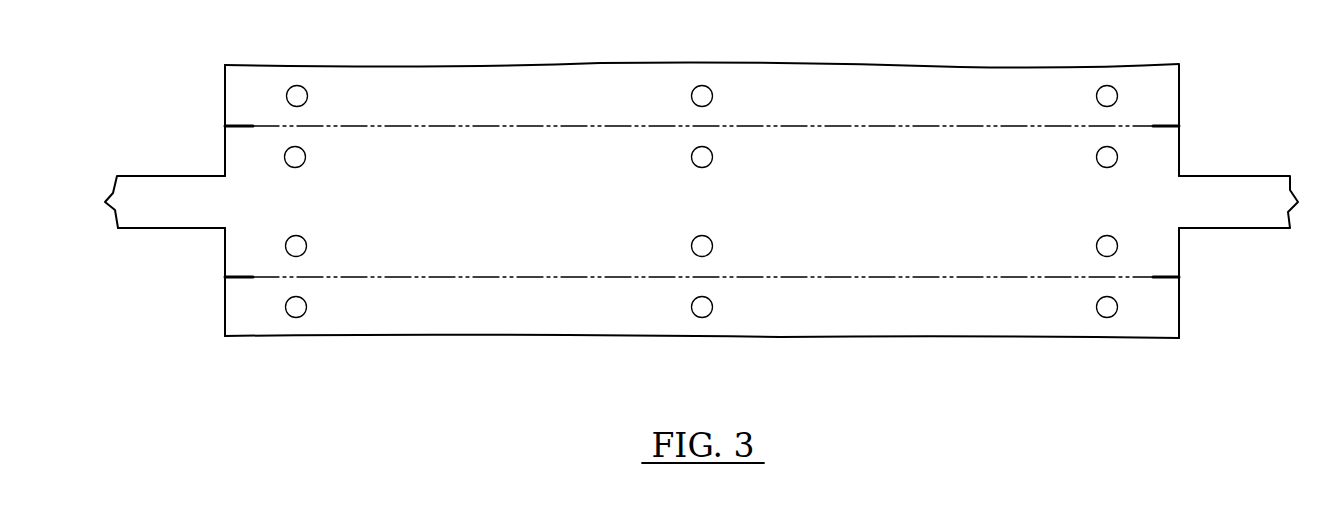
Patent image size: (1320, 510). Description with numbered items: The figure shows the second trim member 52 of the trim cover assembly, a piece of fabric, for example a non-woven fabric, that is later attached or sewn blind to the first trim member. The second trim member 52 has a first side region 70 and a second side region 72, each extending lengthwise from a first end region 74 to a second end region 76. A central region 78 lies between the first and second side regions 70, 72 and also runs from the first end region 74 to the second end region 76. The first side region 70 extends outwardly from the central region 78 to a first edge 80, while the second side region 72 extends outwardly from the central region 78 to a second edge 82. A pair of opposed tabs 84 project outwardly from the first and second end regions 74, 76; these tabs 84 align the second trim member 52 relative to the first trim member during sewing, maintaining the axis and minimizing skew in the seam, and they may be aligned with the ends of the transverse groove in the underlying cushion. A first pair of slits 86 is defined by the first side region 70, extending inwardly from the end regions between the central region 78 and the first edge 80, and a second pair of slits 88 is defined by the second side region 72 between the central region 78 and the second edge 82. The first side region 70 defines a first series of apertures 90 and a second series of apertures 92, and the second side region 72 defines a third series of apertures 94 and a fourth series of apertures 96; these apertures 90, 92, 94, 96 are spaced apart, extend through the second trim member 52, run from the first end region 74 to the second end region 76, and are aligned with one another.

The second trim member 52 is at (966, 344).
The first side region 70 is at (944, 99).
The second side region 72 is at (877, 305).
The first end region 74 is at (139, 157).
The second end region 76 is at (1260, 157).
The central region 78 is at (507, 233).
The first edge 80 is at (576, 64).
The second edge 82 is at (563, 339).
The tabs 84 is at (150, 230).
The first pair of slits 86 is at (243, 122).
The second pair of slits 88 is at (243, 283).
The first series of apertures 90 is at (291, 86).
The second series of apertures 92 is at (306, 156).
The third series of apertures 94 is at (307, 247).
The fourth series of apertures 96 is at (293, 318).